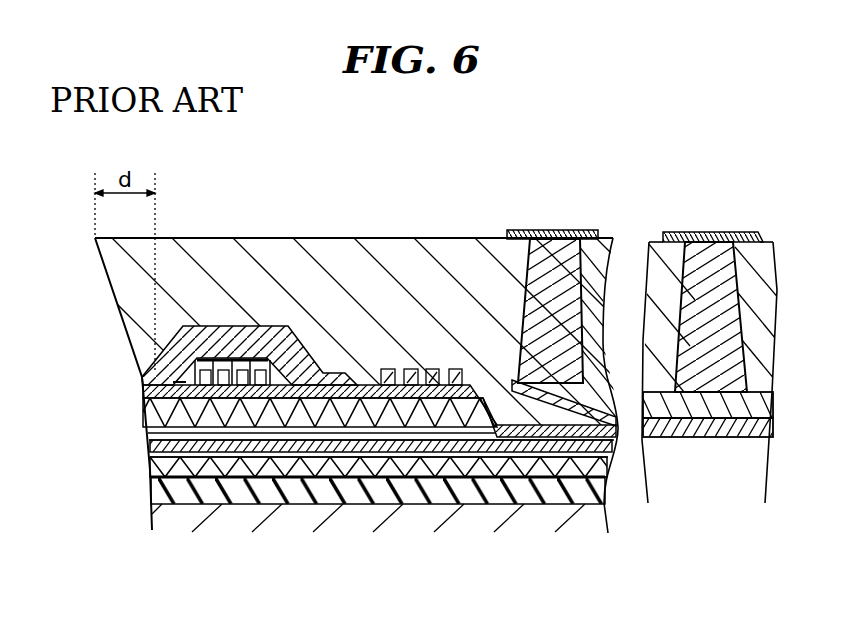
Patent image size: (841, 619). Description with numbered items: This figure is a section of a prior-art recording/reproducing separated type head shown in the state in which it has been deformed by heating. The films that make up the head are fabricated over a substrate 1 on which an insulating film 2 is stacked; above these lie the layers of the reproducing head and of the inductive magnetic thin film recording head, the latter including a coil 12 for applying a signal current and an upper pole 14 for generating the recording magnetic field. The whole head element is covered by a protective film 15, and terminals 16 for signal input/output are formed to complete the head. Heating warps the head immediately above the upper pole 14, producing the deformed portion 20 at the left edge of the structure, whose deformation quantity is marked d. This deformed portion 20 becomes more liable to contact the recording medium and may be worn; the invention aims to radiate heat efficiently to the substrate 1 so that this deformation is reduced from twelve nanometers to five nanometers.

The substrate 1 is at (440, 520).
The insulating film 2 is at (338, 490).
The coil 12 is at (140, 376).
The upper pole 14 is at (245, 327).
The protective film 15 is at (393, 256).
The terminals 16 is at (660, 238).
The deformed portion 20 is at (110, 276).